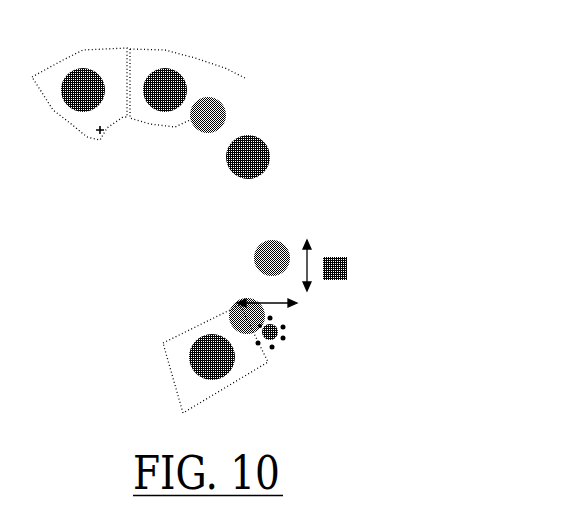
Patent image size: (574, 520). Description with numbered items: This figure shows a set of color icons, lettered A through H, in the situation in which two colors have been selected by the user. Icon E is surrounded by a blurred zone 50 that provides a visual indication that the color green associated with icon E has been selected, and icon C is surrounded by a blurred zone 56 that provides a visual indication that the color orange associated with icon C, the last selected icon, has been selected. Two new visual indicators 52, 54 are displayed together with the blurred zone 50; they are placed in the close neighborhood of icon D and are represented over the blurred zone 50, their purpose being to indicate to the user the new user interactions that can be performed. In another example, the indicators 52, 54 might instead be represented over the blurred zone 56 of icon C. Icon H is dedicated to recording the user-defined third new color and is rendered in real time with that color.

The blurred zone 50 is at (345, 221).
The visual indicator 52 is at (334, 284).
The visual indicator 54 is at (283, 345).
The blurred zone 56 is at (280, 94).